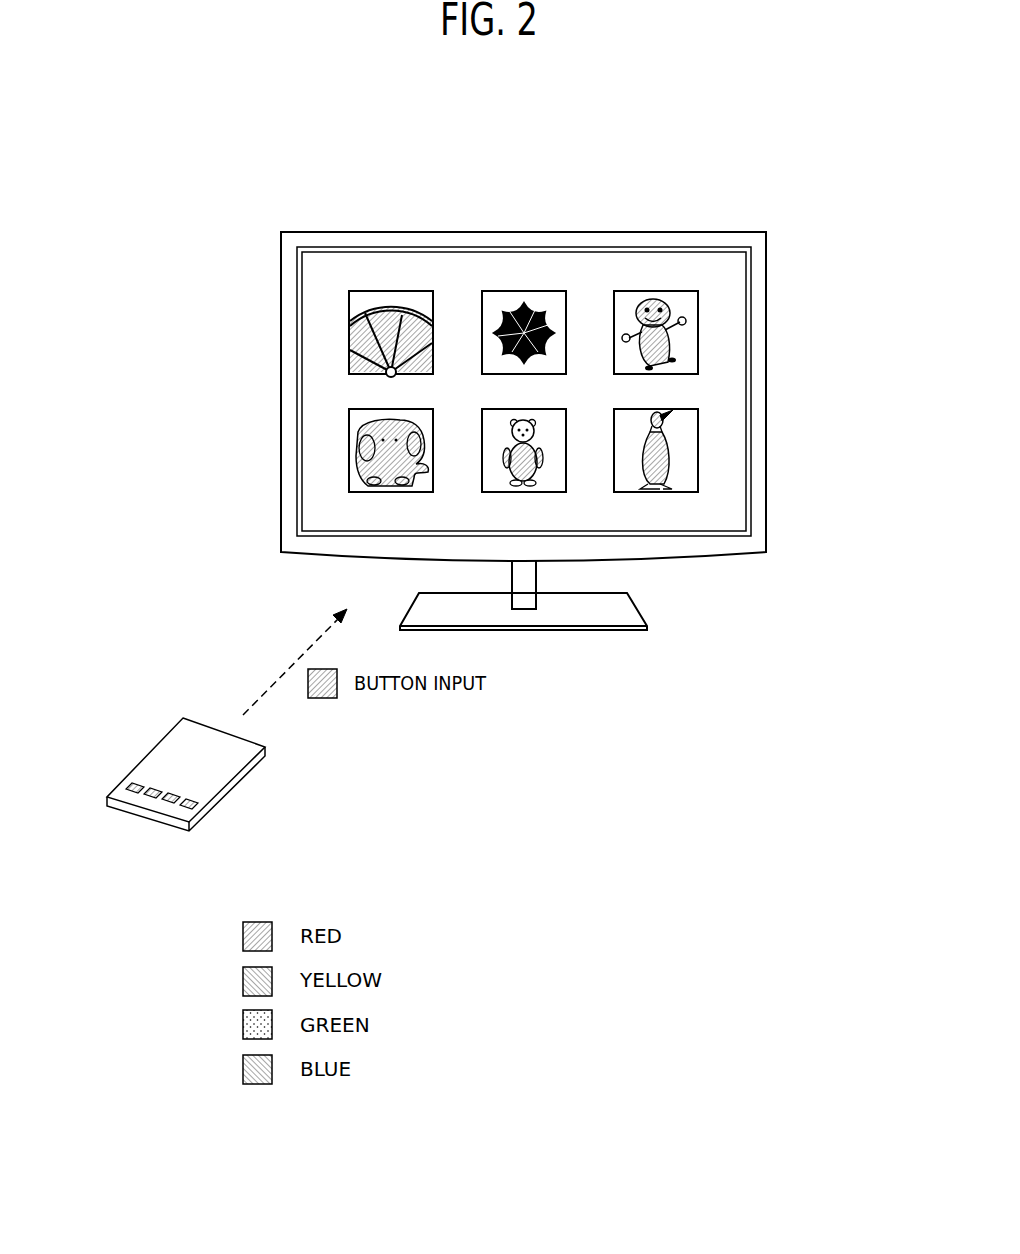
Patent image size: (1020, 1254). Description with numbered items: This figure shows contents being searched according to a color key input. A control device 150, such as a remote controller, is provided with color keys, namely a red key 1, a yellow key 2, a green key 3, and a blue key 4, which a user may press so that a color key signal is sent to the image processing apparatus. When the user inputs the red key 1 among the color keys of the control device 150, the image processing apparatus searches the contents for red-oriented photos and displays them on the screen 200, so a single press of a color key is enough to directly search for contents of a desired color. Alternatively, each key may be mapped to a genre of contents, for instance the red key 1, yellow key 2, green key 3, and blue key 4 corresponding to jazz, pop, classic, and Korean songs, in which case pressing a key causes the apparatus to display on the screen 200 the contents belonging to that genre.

The screen 200 is at (766, 423).
The control device 150 is at (172, 771).
The red key 1 is at (132, 791).
The yellow key 2 is at (150, 796).
The green key 3 is at (168, 801).
The blue key 4 is at (187, 807).